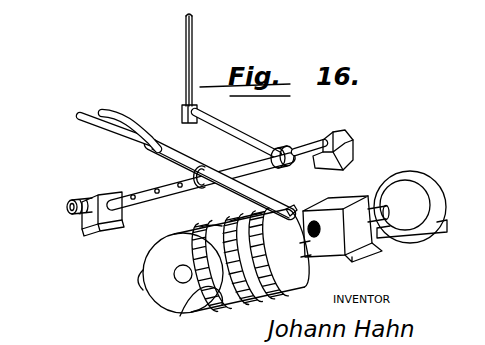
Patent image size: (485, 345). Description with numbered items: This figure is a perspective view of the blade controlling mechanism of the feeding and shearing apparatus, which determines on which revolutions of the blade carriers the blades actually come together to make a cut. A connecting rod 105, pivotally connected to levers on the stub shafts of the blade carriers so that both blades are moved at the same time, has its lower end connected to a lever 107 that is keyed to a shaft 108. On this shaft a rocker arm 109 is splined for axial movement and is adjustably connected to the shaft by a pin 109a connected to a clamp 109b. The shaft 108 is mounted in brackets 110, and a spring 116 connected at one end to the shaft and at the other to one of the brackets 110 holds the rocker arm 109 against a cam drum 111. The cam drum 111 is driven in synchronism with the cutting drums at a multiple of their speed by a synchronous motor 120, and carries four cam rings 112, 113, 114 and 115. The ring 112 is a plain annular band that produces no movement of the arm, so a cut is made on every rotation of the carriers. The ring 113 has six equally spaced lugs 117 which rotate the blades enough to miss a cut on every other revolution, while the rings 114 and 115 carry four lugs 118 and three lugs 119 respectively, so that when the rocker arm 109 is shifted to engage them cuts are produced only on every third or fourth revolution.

The connecting rod 105 is at (185, 43).
The lever 107 is at (218, 118).
The shaft 108 is at (304, 143).
The rocker arm 109 is at (247, 184).
The pin 109a is at (168, 160).
The clamp 109b is at (163, 143).
The bracket 110 is at (88, 223).
The cam drum 111 is at (155, 287).
The cam ring 112 is at (306, 263).
The cam ring 113 is at (291, 270).
The cam ring 114 is at (233, 302).
The cam ring 115 is at (190, 296).
The spring 116 is at (88, 196).
The lug 117 is at (241, 213).
The lug 118 is at (242, 212).
The lug 119 is at (200, 226).
The synchronous motor 120 is at (420, 179).